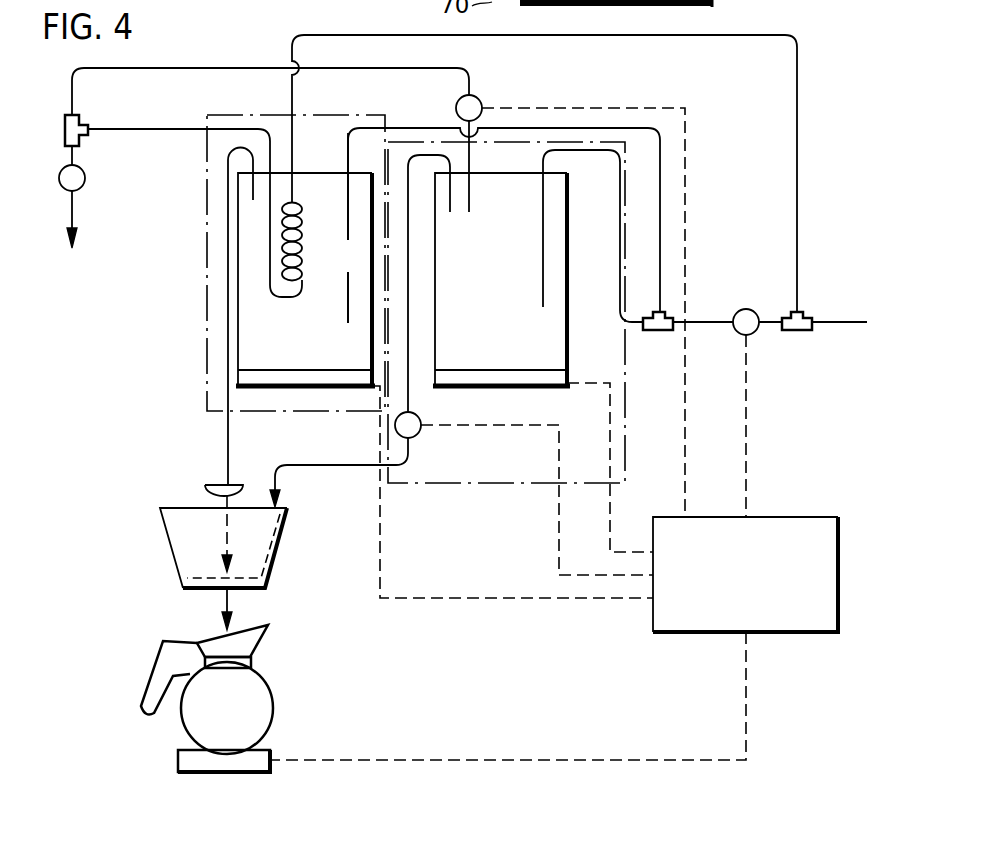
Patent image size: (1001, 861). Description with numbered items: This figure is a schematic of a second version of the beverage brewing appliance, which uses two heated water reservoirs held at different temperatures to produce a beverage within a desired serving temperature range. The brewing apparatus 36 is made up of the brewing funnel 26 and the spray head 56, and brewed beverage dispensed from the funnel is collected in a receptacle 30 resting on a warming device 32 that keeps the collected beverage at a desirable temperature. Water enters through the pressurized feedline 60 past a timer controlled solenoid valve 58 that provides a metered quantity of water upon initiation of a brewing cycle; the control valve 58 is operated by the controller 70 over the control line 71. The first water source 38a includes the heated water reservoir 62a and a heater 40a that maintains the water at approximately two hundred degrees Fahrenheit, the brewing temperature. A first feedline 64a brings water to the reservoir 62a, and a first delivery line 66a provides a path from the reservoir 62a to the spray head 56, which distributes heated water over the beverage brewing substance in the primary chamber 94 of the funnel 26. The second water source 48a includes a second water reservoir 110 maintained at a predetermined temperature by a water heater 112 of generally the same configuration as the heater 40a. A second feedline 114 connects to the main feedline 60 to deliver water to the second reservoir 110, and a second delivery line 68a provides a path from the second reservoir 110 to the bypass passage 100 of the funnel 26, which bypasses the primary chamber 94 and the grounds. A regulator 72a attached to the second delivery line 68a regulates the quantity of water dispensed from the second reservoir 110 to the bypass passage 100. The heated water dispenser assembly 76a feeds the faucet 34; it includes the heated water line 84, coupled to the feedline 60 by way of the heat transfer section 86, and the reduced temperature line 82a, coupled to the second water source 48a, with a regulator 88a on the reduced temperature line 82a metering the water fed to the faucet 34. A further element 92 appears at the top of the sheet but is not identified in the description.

The brewing funnel 26 is at (165, 530).
The receptacle 30 is at (183, 712).
The warming device 32 is at (265, 756).
The faucet 34 is at (85, 178).
The brewing apparatus 36 is at (125, 516).
The first water source 38a is at (207, 368).
The heater 40a is at (328, 392).
The second water source 48a is at (625, 385).
The spray head 56 is at (208, 490).
The timer controlled solenoid valve 58 is at (744, 309).
The pressurized feedline 60 is at (832, 320).
The heated water reservoir 62a is at (225, 323).
The first feedline 64a is at (347, 142).
The first delivery line 66a is at (226, 437).
The second delivery line 68a is at (343, 466).
The controller 70 is at (781, 527).
The control line 71 is at (748, 408).
The regulator 72a is at (417, 437).
The heated water dispenser assembly 76a is at (40, 116).
The reduced temperature line 82a is at (214, 68).
The heated water line 84 is at (167, 97).
The heat transfer section 86 is at (298, 228).
The regulator 88a is at (482, 100).
The water supply 92 is at (828, 2).
The primary chamber 94 is at (190, 550).
The bypass passage 100 is at (282, 524).
The second water reservoir 110 is at (567, 312).
The water heater 112 is at (548, 382).
The second feedline 114 is at (620, 198).